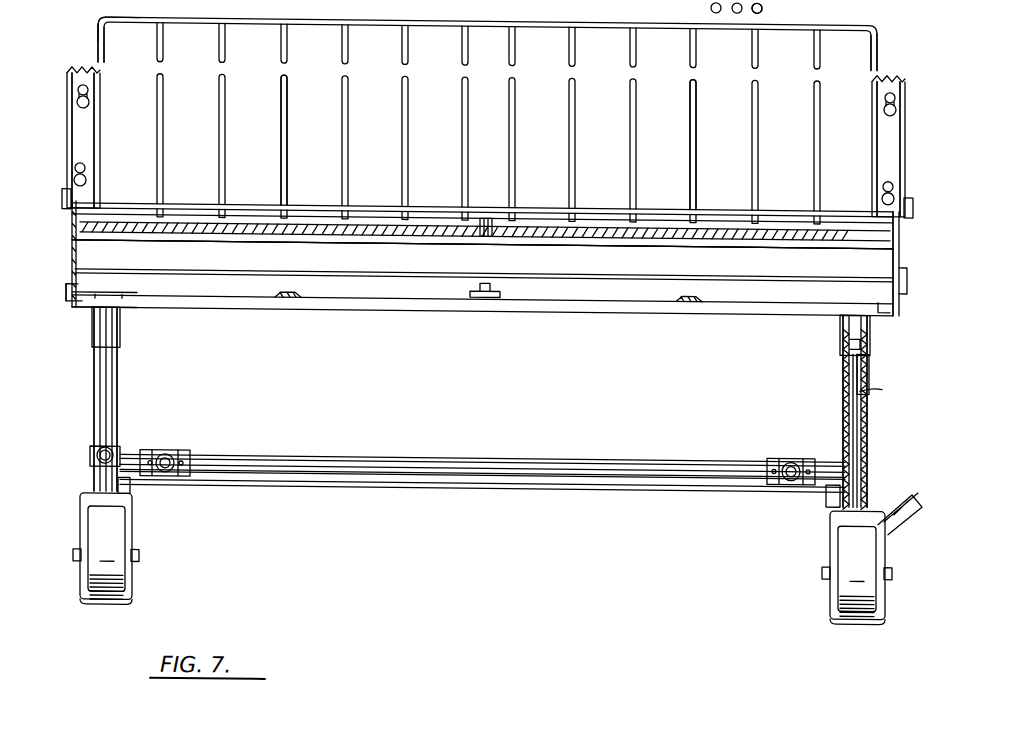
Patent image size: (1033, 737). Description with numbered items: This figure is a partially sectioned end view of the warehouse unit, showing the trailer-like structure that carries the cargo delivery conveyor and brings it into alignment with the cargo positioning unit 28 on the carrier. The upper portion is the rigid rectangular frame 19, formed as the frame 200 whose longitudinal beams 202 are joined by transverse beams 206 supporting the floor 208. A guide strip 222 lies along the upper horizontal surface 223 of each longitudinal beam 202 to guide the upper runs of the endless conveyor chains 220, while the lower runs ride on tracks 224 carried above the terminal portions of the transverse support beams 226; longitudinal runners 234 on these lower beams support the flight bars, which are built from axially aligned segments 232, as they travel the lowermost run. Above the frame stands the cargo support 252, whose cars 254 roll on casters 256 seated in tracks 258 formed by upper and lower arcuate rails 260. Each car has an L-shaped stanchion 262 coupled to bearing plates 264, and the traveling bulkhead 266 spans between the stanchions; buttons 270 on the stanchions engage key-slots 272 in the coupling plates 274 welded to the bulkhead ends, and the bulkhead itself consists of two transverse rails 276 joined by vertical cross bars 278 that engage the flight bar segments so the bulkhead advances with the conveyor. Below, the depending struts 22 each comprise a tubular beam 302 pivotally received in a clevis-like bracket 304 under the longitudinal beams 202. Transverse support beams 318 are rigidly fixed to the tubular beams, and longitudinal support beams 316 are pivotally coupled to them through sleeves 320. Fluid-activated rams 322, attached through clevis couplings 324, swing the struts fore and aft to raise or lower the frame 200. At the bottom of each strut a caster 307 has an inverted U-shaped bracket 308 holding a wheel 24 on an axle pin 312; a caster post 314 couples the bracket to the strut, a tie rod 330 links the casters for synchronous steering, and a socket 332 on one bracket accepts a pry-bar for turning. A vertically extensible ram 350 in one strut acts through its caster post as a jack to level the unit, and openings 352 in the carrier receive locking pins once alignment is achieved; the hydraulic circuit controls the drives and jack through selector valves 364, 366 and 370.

The rigid rectangular frame 19 is at (76, 330).
The strut 22 is at (118, 380).
The wheel 24 is at (110, 600).
The cargo positioning unit 28 is at (727, 207).
The rectangular frame 200 is at (882, 318).
The longitudinal beam 202 is at (70, 305).
The transverse beam 206 is at (390, 252).
The floor 208 is at (322, 226).
The endless conveyor chain 220 is at (486, 213).
The guide strip 222 is at (885, 218).
The upper horizontal surface 223 is at (72, 248).
The track 224 is at (96, 292).
The transverse support beam 226 is at (375, 302).
The flight bar segment 232 is at (258, 226).
The longitudinal runner 234 is at (285, 296).
The cargo support 252 is at (880, 28).
The car 254 is at (56, 85).
The caster 256 is at (80, 240).
The track 258 is at (82, 242).
The arcuate rail 260 is at (80, 266).
The stanchion 262 is at (101, 33).
The bearing plate 264 is at (62, 198).
The traveling bulkhead 266 is at (104, 16).
The button 270 is at (88, 90).
The key-slot 272 is at (89, 104).
The coupling plate 274 is at (80, 143).
The rail 276 is at (450, 24).
The cross bar 278 is at (690, 150).
The tubular beam 302 is at (98, 386).
The clevis-like bracket 304 is at (122, 320).
The caster 307 is at (92, 605).
The inverted U-shaped bracket 308 is at (132, 520).
The axle or bearing pin 312 is at (139, 552).
The caster post 314 is at (862, 480).
The longitudinal support beam 316 is at (170, 470).
The transverse support beam 318 is at (553, 453).
The sleeve 320 is at (165, 448).
The fluid-activated extendible ram 322 is at (95, 478).
The clevis coupling 324 is at (97, 450).
The tie rod 330 is at (428, 485).
The socket 332 is at (905, 512).
The vertically extensible ram 350 is at (853, 375).
The opening 352 is at (828, 508).
The two-way selector valve 364 is at (802, 9).
The two-way selector valve 366 is at (762, 0).
The ram selector valve 370 is at (908, 295).